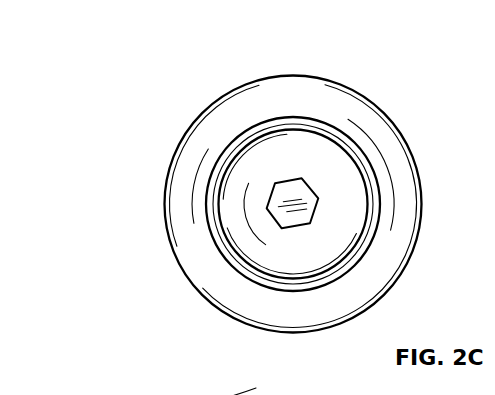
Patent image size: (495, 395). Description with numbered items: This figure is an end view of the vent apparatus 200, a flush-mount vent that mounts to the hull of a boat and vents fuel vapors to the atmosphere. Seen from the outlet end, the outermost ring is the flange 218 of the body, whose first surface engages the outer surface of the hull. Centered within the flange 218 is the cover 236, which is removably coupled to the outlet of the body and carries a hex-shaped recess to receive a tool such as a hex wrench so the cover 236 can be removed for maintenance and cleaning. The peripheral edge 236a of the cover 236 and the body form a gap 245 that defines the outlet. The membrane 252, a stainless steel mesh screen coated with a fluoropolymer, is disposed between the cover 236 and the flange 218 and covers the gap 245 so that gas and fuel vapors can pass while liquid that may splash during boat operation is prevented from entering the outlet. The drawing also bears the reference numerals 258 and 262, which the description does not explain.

The vent apparatus 200 is at (157, 66).
The flange 218 is at (203, 138).
The cover 236 is at (347, 188).
The peripheral edge of the cover 236a is at (217, 187).
The gap 245 is at (208, 227).
The membrane 252 is at (333, 128).
The conduit 258 is at (237, 394).
The hex socket 262 is at (302, 213).